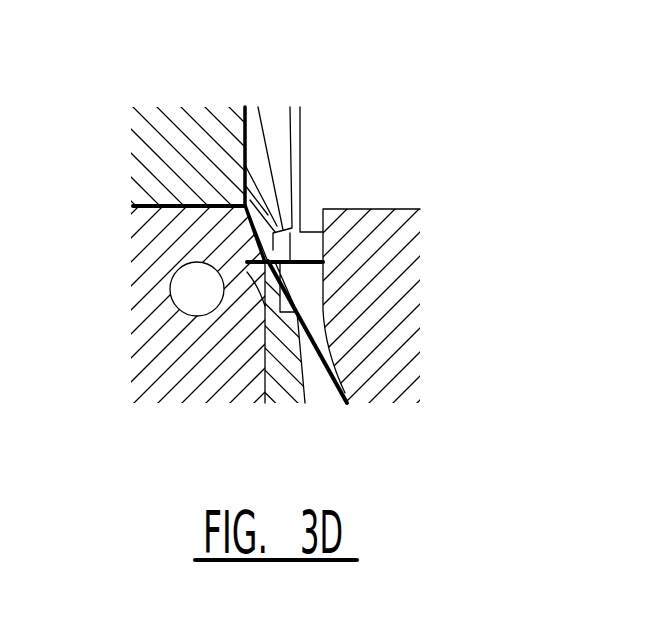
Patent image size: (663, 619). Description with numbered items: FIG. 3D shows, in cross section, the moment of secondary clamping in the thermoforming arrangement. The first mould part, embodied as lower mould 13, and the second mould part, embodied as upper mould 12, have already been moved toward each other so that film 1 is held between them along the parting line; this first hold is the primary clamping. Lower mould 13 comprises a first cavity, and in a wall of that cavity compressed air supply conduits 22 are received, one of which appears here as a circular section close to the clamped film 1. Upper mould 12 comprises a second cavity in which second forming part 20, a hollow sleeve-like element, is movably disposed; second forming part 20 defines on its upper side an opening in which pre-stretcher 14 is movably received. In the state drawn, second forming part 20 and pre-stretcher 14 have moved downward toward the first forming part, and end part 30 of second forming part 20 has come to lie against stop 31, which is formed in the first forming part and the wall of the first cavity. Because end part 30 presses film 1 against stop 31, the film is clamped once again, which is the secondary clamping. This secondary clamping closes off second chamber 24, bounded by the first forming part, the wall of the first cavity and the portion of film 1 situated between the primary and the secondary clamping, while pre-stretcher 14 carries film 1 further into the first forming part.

The film 1 is at (152, 212).
The upper mould 12 is at (148, 149).
The lower mould 13 is at (150, 253).
The pre-stretcher 14 is at (405, 322).
The second forming part 20 is at (277, 133).
The compressed air supply conduits 22 is at (197, 311).
The second chamber 24 is at (222, 288).
The end part 30 is at (268, 250).
The stop 31 is at (213, 345).